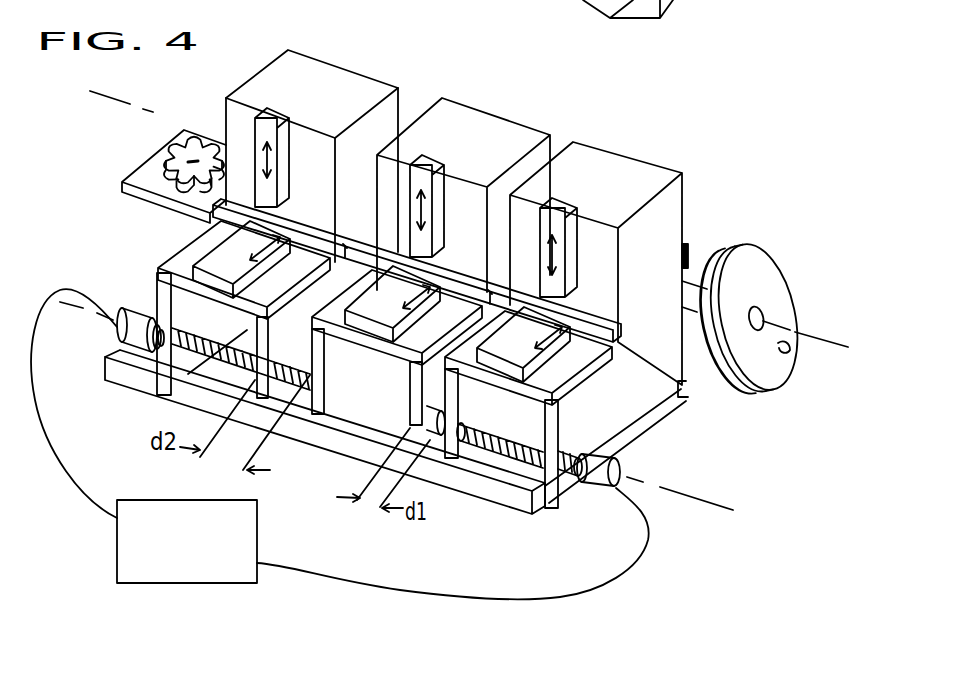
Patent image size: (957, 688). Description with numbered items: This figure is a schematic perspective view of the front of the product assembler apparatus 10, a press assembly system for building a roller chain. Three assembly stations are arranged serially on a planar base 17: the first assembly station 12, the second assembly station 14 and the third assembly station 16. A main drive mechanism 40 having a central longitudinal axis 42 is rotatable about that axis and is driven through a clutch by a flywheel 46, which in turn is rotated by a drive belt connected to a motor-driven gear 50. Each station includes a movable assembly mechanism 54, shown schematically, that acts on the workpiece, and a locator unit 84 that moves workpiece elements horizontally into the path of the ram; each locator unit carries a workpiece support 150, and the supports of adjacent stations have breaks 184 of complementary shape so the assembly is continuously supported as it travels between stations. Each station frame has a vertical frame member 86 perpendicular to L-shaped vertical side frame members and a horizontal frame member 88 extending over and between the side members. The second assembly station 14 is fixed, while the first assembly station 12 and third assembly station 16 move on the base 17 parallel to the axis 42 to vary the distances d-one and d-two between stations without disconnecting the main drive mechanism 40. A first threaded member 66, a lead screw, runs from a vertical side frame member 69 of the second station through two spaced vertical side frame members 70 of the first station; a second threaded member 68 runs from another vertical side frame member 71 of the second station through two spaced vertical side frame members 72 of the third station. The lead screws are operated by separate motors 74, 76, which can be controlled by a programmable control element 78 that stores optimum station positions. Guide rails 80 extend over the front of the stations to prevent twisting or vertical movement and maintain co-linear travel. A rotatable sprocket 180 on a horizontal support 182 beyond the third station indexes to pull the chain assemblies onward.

The product assembler apparatus 10 is at (312, 137).
The first assembly station 12 is at (628, 162).
The second assembly station 14 is at (470, 118).
The third assembly station 16 is at (283, 68).
The planar base 17 is at (670, 410).
The main drive mechanism 40 is at (690, 282).
The central longitudinal axis 42 is at (140, 97).
The flywheel 46 is at (768, 294).
The gear 50 is at (787, 352).
The movable assembly mechanism 54 is at (270, 116).
The first threaded member 66 is at (568, 475).
The second threaded member 68 is at (153, 340).
The vertical side frame member 69 is at (413, 427).
The vertical side frame members 70 is at (523, 418).
The vertical side frame member 71 is at (353, 381).
The vertical side frame members 72 is at (221, 331).
The motor 74 is at (620, 465).
The motor 76 is at (123, 327).
The programmable control element 78 is at (177, 572).
The guide rails 80 is at (622, 15).
The locator unit 84 is at (225, 253).
The vertical frame member 86 is at (233, 120).
The horizontal frame member 88 is at (170, 290).
The workpiece support 150 is at (287, 227).
The rotatable sprocket 180 is at (183, 150).
The horizontal support 182 is at (145, 183).
The breaks 184 is at (335, 218).